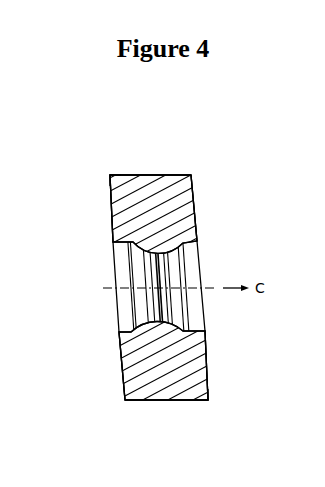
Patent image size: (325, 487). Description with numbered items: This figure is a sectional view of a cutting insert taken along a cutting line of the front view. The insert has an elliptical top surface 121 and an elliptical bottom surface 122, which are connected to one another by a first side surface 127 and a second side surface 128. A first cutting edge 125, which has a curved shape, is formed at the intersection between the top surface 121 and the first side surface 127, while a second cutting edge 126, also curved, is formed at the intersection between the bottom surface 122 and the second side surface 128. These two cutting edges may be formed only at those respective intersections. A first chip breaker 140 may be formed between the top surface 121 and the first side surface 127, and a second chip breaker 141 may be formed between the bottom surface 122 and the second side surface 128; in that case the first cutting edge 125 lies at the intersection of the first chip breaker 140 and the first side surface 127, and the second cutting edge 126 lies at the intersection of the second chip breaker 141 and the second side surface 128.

The top surface 121 is at (195, 197).
The bottom surface 122 is at (122, 356).
The first cutting edge 125 is at (214, 408).
The second cutting edge 126 is at (103, 167).
The first side surface 127 is at (160, 402).
The second side surface 128 is at (152, 173).
The first chip breaker 140 is at (205, 370).
The second chip breaker 141 is at (112, 203).